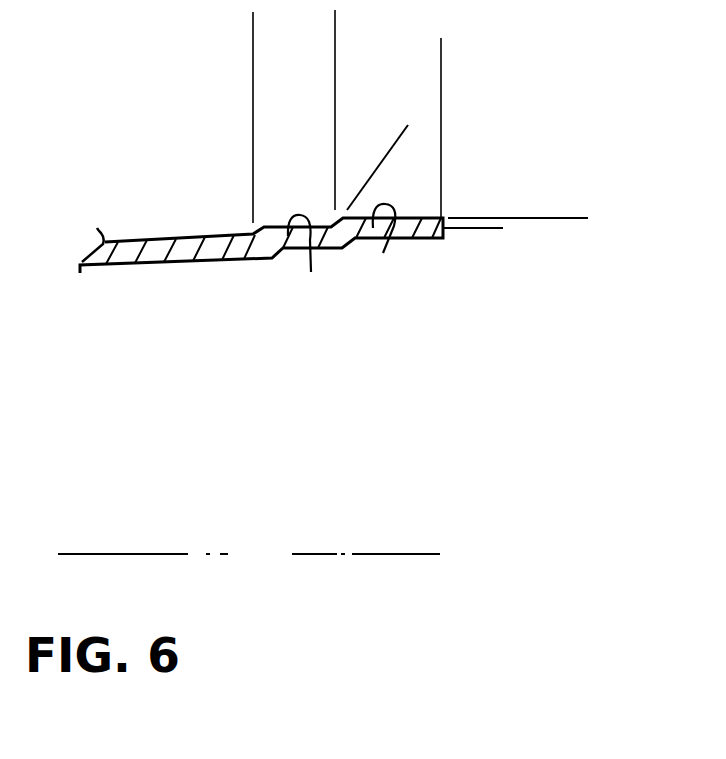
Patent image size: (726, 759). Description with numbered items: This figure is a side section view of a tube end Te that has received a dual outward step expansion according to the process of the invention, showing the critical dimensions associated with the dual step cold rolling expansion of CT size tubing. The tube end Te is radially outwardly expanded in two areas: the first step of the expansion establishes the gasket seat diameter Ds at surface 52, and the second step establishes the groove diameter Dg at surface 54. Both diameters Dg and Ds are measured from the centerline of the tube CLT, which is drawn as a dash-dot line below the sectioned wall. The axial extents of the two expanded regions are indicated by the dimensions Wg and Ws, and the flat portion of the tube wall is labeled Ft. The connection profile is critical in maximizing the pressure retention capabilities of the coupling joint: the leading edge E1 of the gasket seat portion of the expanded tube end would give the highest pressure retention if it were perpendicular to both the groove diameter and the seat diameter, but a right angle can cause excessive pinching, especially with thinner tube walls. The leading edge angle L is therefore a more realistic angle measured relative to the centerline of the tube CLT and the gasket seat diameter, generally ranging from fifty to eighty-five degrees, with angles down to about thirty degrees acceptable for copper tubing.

The gasket seat diameter surface 52 is at (395, 251).
The groove diameter surface 54 is at (314, 261).
The tube end Te is at (185, 297).
The terminal flat Ft is at (240, 233).
The leading edge E1 is at (320, 217).
The leading edge angle L is at (394, 161).
The gap width Wg is at (333, 38).
The step width Ws is at (335, 66).
The groove diameter Dg is at (458, 635).
The gasket seat diameter Ds is at (557, 232).
The centerline of the tube CLT is at (249, 557).